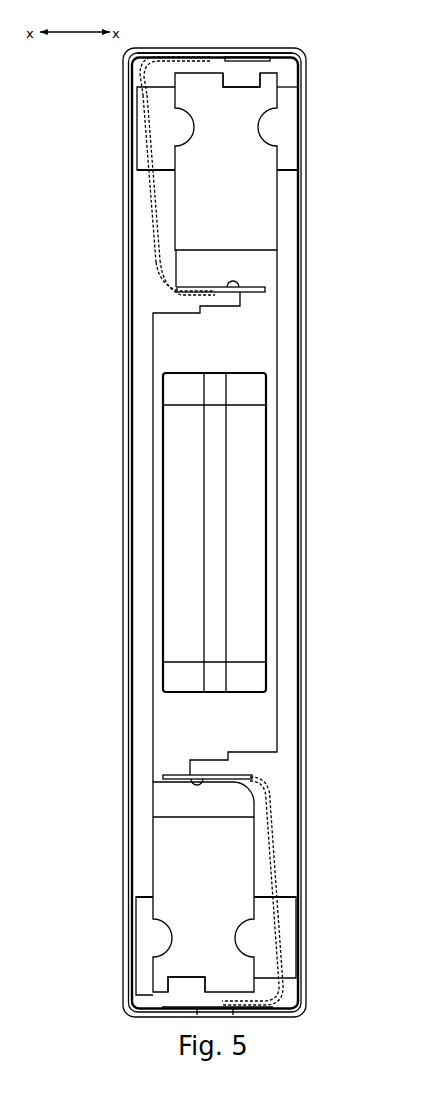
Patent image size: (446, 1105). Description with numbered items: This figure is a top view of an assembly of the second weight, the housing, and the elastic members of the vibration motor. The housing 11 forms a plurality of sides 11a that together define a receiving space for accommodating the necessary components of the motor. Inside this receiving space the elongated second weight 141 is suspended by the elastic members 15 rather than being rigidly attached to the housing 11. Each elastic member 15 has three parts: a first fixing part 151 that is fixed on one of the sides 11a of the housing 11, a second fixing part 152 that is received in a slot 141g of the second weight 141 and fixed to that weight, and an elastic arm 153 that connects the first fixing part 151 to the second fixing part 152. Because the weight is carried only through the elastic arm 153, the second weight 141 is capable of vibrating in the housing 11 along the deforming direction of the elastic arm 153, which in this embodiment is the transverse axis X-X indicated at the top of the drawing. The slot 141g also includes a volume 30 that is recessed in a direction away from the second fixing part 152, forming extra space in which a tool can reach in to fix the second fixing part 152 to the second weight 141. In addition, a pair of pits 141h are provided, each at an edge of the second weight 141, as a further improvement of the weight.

The housing 11 is at (303, 117).
The side 11a is at (223, 49).
The second weight 141 is at (243, 205).
The slot 141g is at (232, 298).
The pit 141h is at (242, 82).
The elastic member 15 is at (148, 531).
The first fixing part 151 is at (200, 57).
The second fixing part 152 is at (131, 281).
The elastic arm 153 is at (157, 191).
The volume 30 is at (183, 307).